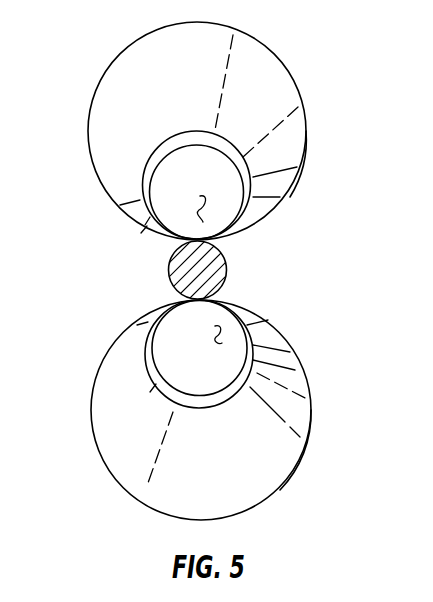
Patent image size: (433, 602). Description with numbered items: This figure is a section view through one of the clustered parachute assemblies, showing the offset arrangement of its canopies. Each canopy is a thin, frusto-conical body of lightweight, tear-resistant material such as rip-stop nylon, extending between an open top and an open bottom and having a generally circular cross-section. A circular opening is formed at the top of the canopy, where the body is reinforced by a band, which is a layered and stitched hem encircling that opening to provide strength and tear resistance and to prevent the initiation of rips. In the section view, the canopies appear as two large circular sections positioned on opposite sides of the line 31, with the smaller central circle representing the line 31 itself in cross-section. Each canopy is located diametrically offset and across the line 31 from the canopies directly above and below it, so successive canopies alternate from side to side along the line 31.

The line 31 is at (228, 275).